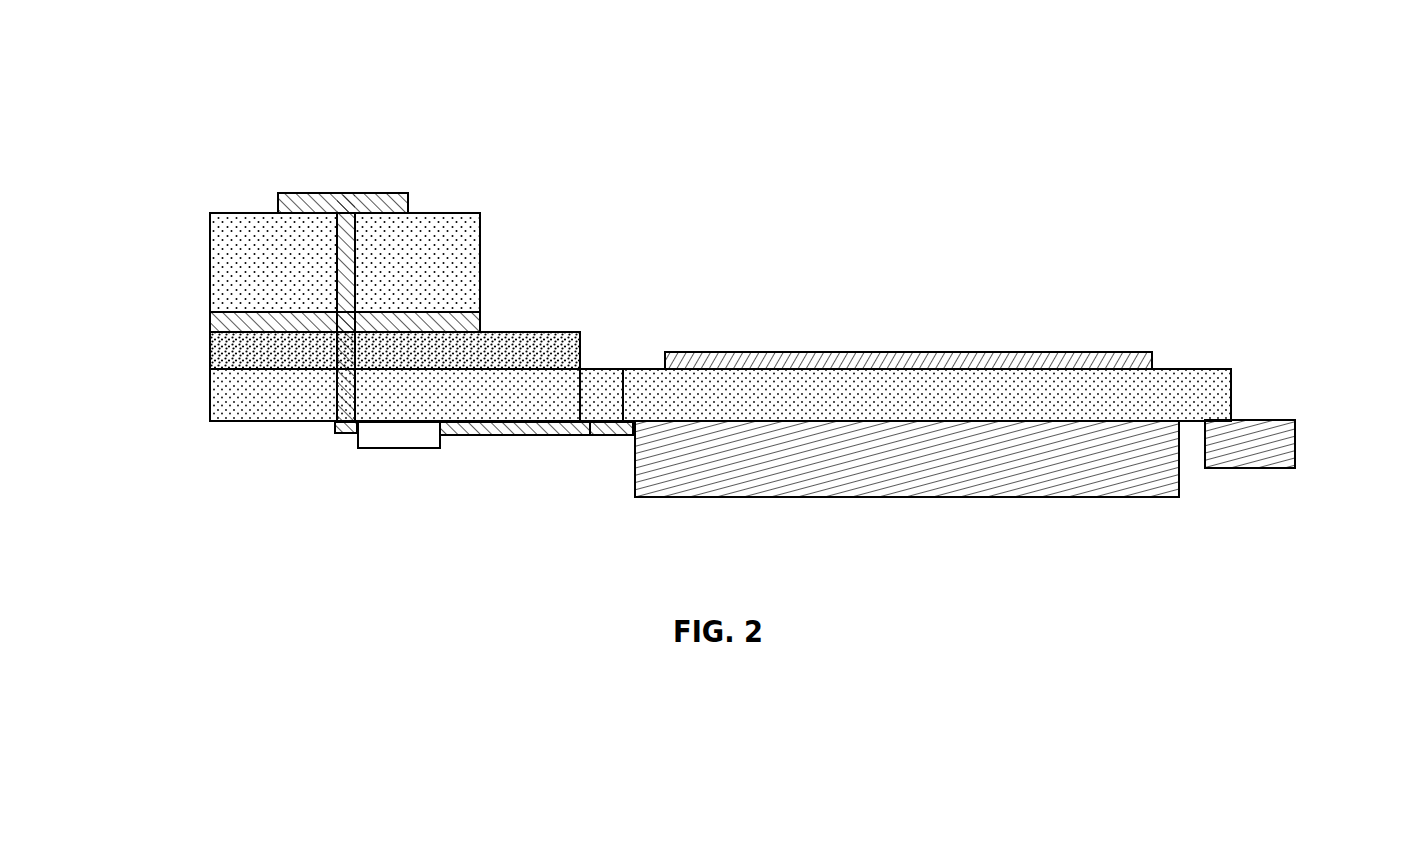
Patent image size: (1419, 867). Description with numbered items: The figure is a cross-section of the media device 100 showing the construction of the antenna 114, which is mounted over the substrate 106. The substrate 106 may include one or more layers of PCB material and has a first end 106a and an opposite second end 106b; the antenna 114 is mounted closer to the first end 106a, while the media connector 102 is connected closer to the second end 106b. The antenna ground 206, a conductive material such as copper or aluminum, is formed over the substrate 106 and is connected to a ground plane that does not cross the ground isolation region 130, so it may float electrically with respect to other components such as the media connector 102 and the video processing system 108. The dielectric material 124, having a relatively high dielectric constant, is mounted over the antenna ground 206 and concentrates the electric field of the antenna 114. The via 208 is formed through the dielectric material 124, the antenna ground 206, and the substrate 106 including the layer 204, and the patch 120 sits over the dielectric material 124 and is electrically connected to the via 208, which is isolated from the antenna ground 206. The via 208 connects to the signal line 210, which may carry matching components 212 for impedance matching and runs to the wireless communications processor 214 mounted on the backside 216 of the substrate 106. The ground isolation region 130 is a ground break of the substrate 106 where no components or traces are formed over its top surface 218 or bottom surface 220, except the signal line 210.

The media device 100 is at (751, 328).
The media connector 102 is at (1260, 462).
The substrate 106 is at (751, 331).
The first end 106a is at (186, 360).
The second end 106b is at (1322, 391).
The video processing system 108 is at (925, 362).
The antenna 114 is at (395, 313).
The patch 120 is at (392, 205).
The dielectric material 124 is at (450, 250).
The ground isolation region 130 is at (614, 358).
The layer 204 is at (513, 352).
The antenna ground 206 is at (438, 320).
The via 208 is at (347, 230).
The signal line 210 is at (345, 433).
The matching components 212 is at (403, 448).
The wireless communications processor 214 is at (930, 516).
The backside 216 is at (1181, 532).
The top surface 218 is at (595, 368).
The bottom surface 220 is at (590, 427).